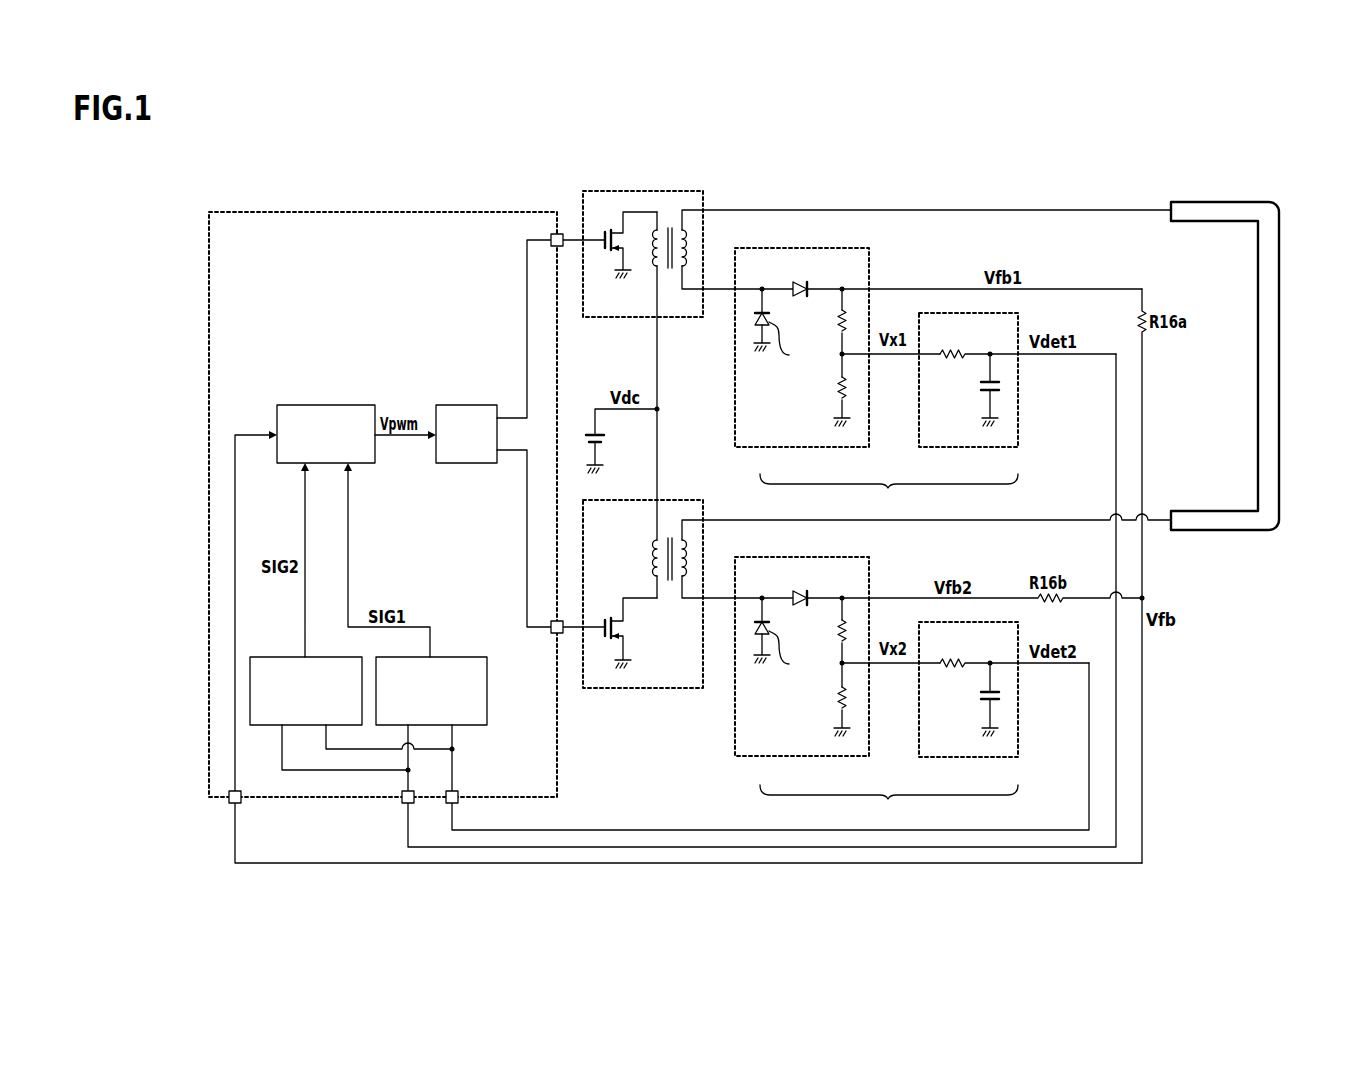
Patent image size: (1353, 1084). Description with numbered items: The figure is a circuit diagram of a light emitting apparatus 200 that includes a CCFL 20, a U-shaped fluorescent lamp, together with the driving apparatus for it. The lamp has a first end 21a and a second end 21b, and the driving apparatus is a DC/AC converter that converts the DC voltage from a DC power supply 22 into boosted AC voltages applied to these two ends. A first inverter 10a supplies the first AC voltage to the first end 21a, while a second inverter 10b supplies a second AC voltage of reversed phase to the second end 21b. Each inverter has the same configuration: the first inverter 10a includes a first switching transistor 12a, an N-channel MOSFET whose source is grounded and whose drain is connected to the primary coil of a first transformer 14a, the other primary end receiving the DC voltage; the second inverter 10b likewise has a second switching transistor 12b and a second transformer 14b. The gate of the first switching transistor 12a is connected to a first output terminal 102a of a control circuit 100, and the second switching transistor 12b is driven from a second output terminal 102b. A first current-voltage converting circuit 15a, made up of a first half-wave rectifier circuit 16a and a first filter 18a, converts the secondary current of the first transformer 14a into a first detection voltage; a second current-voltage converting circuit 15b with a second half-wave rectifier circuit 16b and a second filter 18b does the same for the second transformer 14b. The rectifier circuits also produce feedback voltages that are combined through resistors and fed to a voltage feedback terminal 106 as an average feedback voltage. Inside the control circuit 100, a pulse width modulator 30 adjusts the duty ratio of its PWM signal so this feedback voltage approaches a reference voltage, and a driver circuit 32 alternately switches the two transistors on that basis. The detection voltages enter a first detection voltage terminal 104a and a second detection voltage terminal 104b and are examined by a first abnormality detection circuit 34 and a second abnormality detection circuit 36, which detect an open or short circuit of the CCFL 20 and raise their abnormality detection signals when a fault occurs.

The control circuit 100 is at (387, 213).
The first output terminal 102a is at (551, 240).
The second output terminal 102b is at (553, 634).
The first detection voltage terminal 104a is at (455, 792).
The second detection voltage terminal 104b is at (406, 804).
The voltage feedback terminal 106 is at (240, 804).
The first inverter 10a is at (620, 317).
The second inverter 10b is at (644, 689).
The first switching transistor 12a is at (622, 242).
The second switching transistor 12b is at (631, 633).
The first transformer 14a is at (655, 250).
The second transformer 14b is at (652, 554).
The first current-voltage converting circuit 15a is at (889, 493).
The second current-voltage converting circuit 15b is at (889, 803).
The first half-wave rectifier circuit 16a is at (809, 447).
The second half-wave rectifier circuit 16b is at (809, 756).
The first filter 18a is at (970, 447).
The second filter 18b is at (970, 757).
The CCFL 20 is at (1279, 362).
The first end 21a is at (1172, 215).
The second end 21b is at (1171, 531).
The DC power supply 22 is at (604, 441).
The pulse width modulator 30 is at (330, 406).
The driver circuit 32 is at (472, 406).
The first abnormality detection circuit 34 is at (488, 688).
The second abnormality detection circuit 36 is at (331, 656).
The light emitting apparatus 200 is at (661, 905).